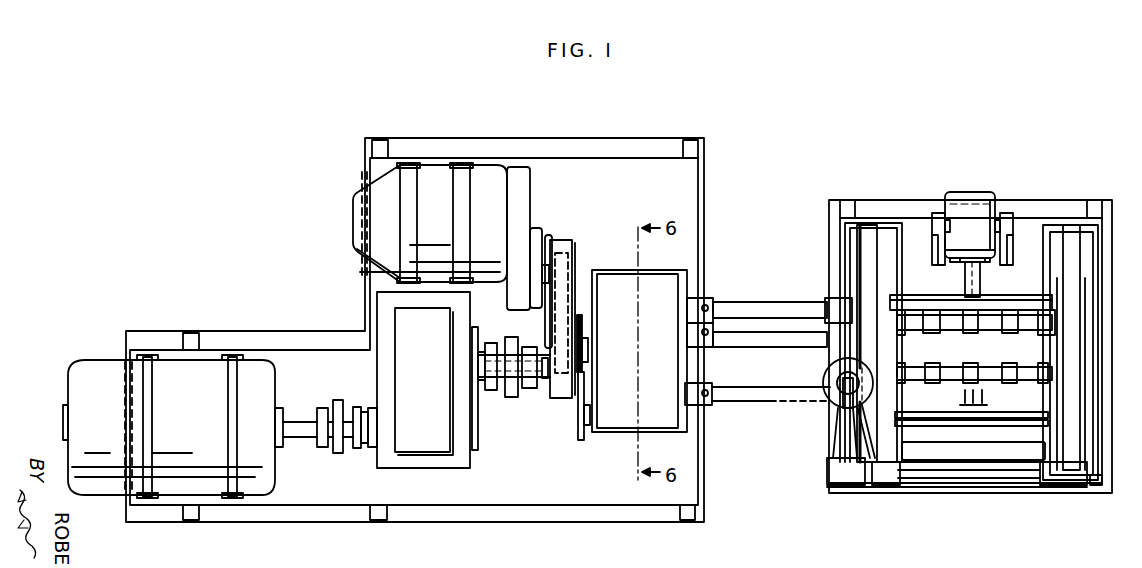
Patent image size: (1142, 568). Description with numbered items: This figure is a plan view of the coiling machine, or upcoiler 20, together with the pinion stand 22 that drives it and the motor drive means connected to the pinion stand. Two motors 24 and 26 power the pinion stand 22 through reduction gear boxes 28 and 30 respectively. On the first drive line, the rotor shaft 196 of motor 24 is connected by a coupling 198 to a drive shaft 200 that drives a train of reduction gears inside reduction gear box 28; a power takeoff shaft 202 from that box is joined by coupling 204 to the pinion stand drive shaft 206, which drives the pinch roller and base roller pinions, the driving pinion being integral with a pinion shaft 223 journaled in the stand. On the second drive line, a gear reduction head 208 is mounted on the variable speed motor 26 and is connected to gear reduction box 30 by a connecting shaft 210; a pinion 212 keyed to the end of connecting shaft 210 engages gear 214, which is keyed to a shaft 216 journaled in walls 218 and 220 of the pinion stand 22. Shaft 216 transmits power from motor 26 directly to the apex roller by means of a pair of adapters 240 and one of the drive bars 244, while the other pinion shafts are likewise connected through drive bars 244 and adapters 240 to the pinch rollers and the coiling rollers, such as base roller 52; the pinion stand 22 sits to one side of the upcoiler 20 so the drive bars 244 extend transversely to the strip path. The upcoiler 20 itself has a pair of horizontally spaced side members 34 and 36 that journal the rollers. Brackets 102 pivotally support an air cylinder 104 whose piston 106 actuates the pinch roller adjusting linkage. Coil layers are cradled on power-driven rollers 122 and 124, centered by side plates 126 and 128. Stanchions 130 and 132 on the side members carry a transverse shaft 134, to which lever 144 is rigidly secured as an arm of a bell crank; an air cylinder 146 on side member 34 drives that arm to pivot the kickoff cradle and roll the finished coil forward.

The upcoiler 20 is at (1016, 494).
The pinion stand 22 is at (668, 285).
The motor 24 is at (82, 381).
The motor 26 is at (382, 207).
The reduction gear box 28 is at (437, 440).
The reduction gear box 30 is at (568, 243).
The side member 34 is at (860, 255).
The side member 36 is at (1073, 240).
The base roller 52 is at (945, 296).
The brackets 102 is at (934, 225).
The air cylinder 104 is at (993, 200).
The piston 106 is at (978, 282).
The roller 122 is at (1027, 360).
The roller 124 is at (955, 325).
The side plate 126 is at (896, 418).
The side plate 128 is at (1046, 422).
The stanchion 130 is at (858, 488).
The stanchion 132 is at (1083, 455).
The transverse shaft 134 is at (915, 470).
The lever 144 is at (845, 425).
The air cylinder 146 is at (843, 410).
The rotor shaft 196 is at (297, 422).
The coupling 198 is at (350, 450).
The drive shaft 200 is at (365, 450).
The power takeoff shaft 202 is at (478, 352).
The coupling 204 is at (525, 392).
The pinion stand drive shaft 206 is at (548, 385).
The gear reduction head 208 is at (518, 193).
The connecting shaft 210 is at (547, 238).
The pinion 212 is at (567, 260).
The gear 214 is at (587, 346).
The shaft 216 is at (583, 325).
The wall 218 is at (581, 437).
The wall 220 is at (707, 410).
The pinion shaft 223 is at (579, 418).
The adapters 240 is at (830, 308).
The drive bars 244 is at (795, 430).